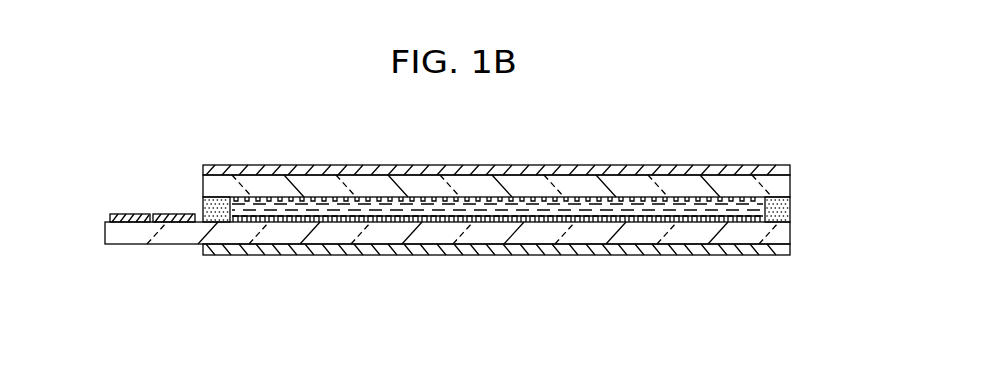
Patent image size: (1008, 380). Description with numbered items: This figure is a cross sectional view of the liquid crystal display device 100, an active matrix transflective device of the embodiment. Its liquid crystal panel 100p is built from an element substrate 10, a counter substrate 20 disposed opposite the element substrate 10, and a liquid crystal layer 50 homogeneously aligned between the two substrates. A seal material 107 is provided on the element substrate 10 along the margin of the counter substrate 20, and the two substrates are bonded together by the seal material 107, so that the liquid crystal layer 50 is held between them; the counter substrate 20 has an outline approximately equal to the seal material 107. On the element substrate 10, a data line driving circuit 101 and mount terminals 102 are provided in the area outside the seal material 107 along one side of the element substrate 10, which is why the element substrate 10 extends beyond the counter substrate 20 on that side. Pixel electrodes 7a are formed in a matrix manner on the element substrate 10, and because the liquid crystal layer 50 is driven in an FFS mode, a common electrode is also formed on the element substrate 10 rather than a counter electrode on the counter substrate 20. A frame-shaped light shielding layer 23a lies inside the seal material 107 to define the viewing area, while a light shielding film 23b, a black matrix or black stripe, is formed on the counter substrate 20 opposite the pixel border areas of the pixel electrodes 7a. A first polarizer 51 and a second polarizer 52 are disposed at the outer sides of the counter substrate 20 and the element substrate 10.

The liquid crystal display device 100 is at (658, 133).
The liquid crystal panel 100p is at (800, 175).
The element substrate 10 is at (685, 233).
The counter substrate 20 is at (773, 183).
The first polarizer 51 is at (432, 165).
The second polarizer 52 is at (323, 248).
The light shielding layer 23a is at (245, 197).
The light shielding film 23b is at (541, 216).
The liquid crystal layer 50 is at (545, 222).
The pixel electrodes 7a is at (447, 222).
The seal material 107 is at (218, 222).
The data line driving circuit 101 is at (177, 215).
The mount terminals 102 is at (130, 215).